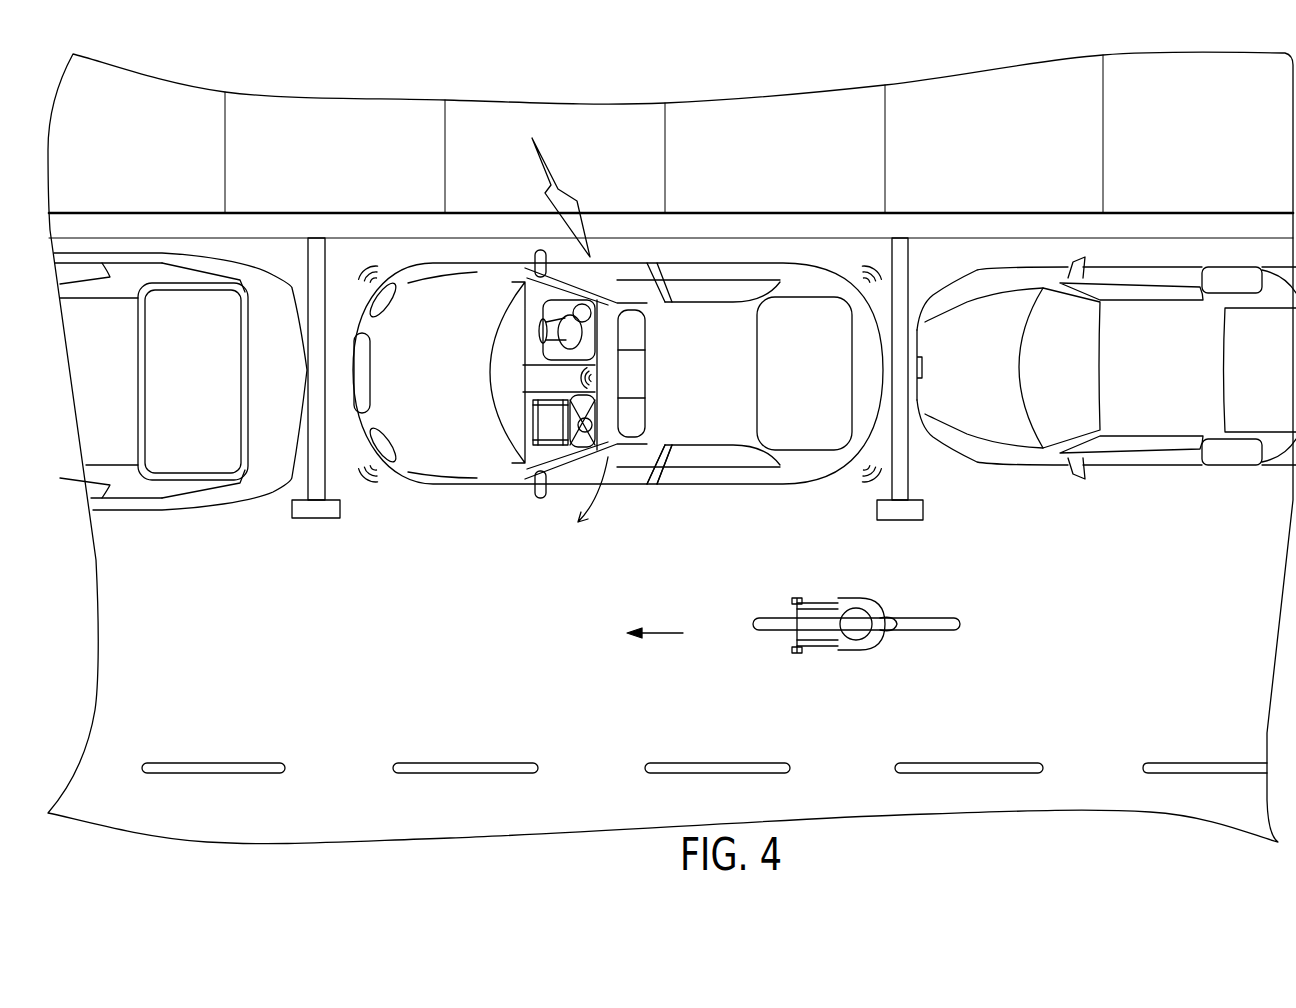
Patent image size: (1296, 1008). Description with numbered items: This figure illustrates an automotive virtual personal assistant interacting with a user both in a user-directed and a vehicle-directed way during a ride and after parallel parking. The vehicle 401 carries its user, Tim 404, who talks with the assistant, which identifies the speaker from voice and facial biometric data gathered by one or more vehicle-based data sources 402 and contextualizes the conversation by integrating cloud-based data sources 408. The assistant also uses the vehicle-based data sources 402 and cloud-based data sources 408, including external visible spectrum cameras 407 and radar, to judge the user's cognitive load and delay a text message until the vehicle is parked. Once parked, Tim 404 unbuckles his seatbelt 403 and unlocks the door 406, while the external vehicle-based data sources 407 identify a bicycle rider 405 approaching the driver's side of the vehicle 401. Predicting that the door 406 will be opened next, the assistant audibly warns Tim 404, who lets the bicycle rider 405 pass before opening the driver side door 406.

The vehicle 401 is at (797, 265).
The vehicle-based data sources 402 is at (592, 378).
The seatbelt 403 is at (578, 418).
The user 404 is at (551, 440).
The bicycle rider 405 is at (853, 658).
The door 406 is at (628, 458).
The external vehicle-based data sources 407 is at (358, 262).
The cloud-based data sources 408 is at (557, 172).